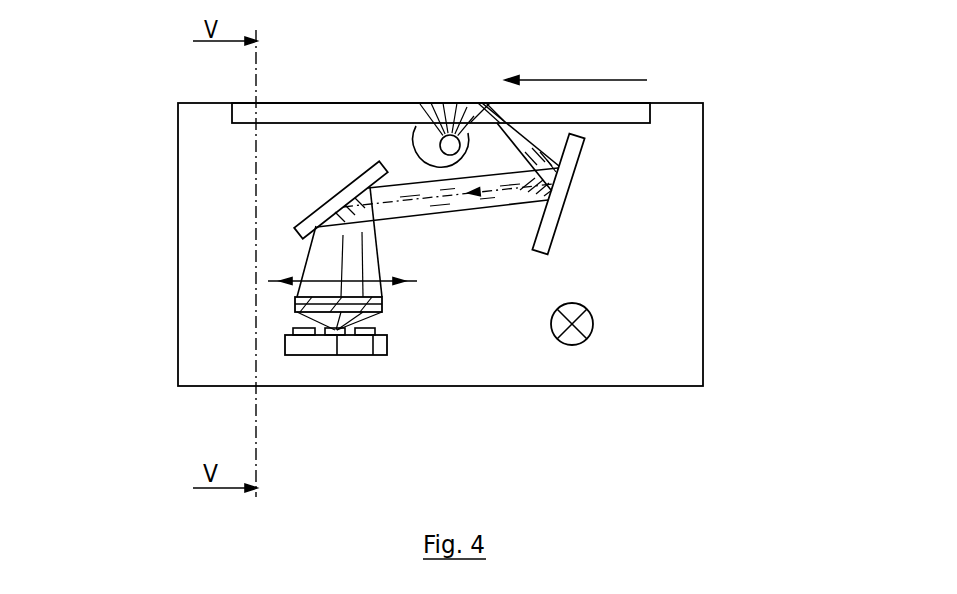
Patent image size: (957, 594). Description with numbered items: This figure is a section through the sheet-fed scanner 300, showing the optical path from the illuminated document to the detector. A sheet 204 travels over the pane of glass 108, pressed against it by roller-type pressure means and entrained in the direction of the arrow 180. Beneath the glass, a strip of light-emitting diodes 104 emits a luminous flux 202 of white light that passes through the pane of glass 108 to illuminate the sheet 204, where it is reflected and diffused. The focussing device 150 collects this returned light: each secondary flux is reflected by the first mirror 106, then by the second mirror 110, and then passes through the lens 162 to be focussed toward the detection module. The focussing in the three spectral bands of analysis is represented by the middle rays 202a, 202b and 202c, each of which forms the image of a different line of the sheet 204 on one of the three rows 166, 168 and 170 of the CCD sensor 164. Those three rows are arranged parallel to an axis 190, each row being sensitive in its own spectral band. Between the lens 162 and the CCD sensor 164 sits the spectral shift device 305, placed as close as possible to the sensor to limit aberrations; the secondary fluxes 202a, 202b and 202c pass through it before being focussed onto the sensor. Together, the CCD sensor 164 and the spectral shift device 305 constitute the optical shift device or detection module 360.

The light-emitting diodes 104 is at (413, 127).
The first mirror 106 is at (550, 228).
The pane of glass 108 is at (308, 110).
The second mirror 110 is at (322, 207).
The focussing device 150 is at (745, 122).
The lens 162 is at (397, 284).
The CCD sensor 164 is at (382, 347).
The row of sensitive elements 166 is at (373, 356).
The row of sensitive elements 168 is at (337, 356).
The row of sensitive elements 170 is at (292, 327).
The arrow 180 is at (603, 78).
The axis 190 is at (594, 322).
The luminous flux 202 is at (437, 190).
The middle ray 202a is at (323, 267).
The middle ray 202b is at (300, 259).
The middle ray 202c is at (350, 236).
The sheet 204 is at (457, 102).
The sheet-fed scanner 300 is at (140, 116).
The spectral shift device 305 is at (295, 297).
The optical shift device or detection module 360 is at (483, 425).